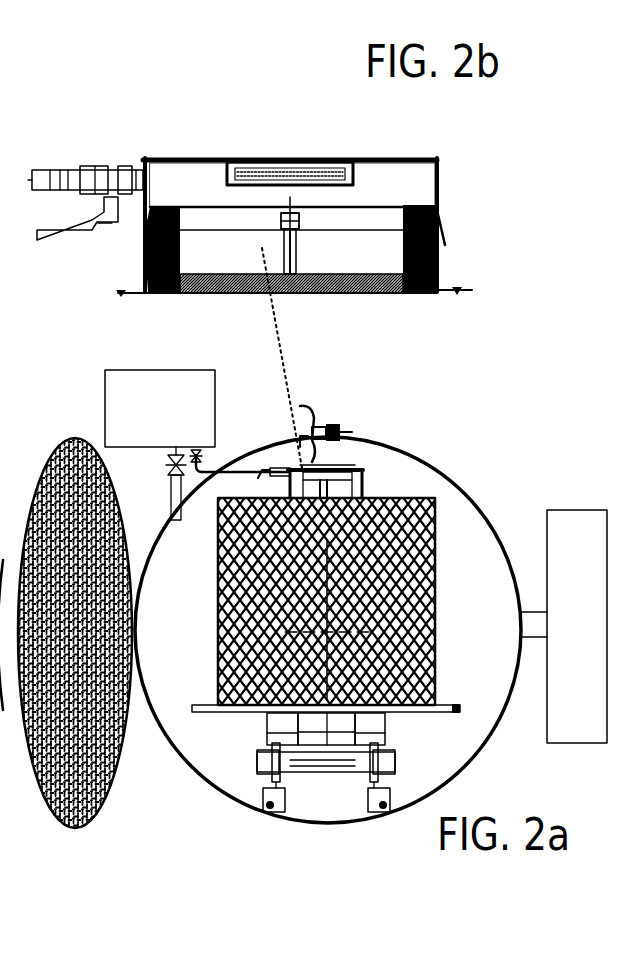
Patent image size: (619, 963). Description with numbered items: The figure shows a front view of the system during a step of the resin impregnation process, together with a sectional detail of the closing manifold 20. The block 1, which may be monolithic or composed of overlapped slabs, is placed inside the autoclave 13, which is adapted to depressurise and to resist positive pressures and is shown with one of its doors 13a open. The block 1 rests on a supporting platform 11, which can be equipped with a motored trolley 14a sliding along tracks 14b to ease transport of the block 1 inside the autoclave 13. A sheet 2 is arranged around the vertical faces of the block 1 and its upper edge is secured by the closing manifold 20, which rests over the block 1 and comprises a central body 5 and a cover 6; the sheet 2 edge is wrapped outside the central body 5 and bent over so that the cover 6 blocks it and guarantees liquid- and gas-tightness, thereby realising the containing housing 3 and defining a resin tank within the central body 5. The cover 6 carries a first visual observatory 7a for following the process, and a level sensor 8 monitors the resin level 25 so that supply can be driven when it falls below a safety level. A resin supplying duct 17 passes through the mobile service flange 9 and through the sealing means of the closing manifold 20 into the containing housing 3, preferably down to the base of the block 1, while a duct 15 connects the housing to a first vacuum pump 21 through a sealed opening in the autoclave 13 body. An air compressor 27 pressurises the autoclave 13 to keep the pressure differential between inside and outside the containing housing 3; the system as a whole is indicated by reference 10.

In FIG. 2A, the block 1 is at (9, 909).
In FIG. 2B, the sheet 2 is at (116, 292).
In FIG. 2A, the containing housing 3 is at (405, 557).
In FIG. 2B, the central body 5 is at (438, 238).
In FIG. 2B, the cover 6 is at (188, 178).
In FIG. 2B, the first visual observatory 7a is at (297, 160).
In FIG. 2B, the level sensor 8 is at (302, 293).
In FIG. 2A, the mobile service flange 9 is at (340, 430).
In FIG. 2A, the processing unit 10 is at (445, 422).
In FIG. 2A, the supporting platform 11 is at (460, 713).
In FIG. 2A, the autoclave 13 is at (190, 767).
In FIG. 2A, the door 13a is at (68, 767).
In FIG. 2A, the trolley 14a is at (320, 762).
In FIG. 2A, the tracks 14b is at (263, 810).
In FIG. 2B, the duct 15 is at (98, 167).
In FIG. 2A, the duct 15 is at (238, 470).
In FIG. 2A, the resin supplying duct 17 is at (304, 440).
In FIG. 2B, the closing manifold 20 is at (466, 158).
In FIG. 2A, the closing manifold 20 is at (365, 473).
In FIG. 2A, the first vacuum pump 21 is at (125, 397).
In FIG. 2B, the resin level 25 is at (340, 293).
In FIG. 2A, the air compressor 27 is at (568, 722).